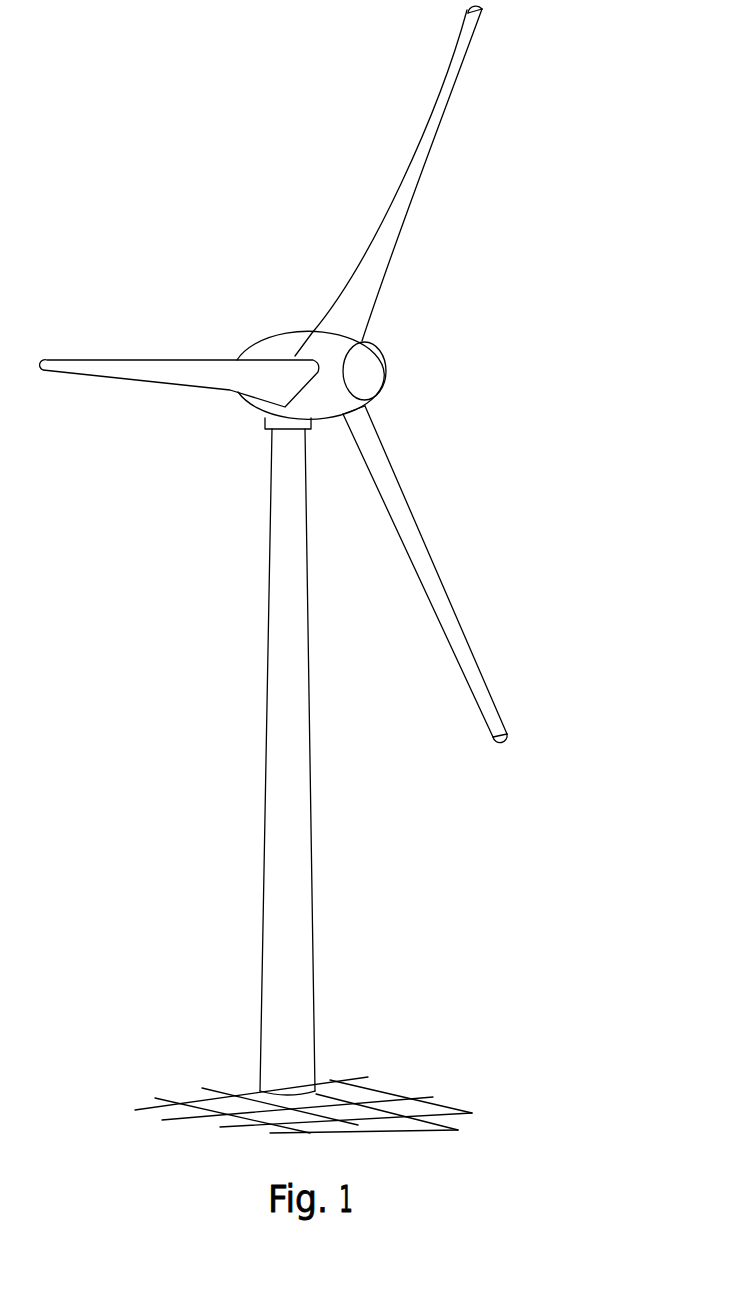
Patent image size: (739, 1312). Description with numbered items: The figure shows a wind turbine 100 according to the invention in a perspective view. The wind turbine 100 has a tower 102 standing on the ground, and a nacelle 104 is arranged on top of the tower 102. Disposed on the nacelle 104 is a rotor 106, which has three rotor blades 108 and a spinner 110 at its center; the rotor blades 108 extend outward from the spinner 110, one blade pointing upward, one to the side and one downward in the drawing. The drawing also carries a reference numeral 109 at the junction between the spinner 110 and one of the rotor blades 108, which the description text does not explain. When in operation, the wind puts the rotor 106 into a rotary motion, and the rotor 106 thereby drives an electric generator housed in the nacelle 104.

The wind turbine 100 is at (228, 496).
The tower 102 is at (295, 863).
The nacelle 104 is at (283, 343).
The rotor 106 is at (453, 295).
The rotor blades 108 is at (428, 128).
The blade root 109 is at (372, 410).
The spinner 110 is at (370, 372).